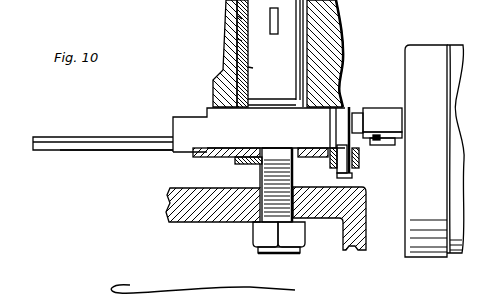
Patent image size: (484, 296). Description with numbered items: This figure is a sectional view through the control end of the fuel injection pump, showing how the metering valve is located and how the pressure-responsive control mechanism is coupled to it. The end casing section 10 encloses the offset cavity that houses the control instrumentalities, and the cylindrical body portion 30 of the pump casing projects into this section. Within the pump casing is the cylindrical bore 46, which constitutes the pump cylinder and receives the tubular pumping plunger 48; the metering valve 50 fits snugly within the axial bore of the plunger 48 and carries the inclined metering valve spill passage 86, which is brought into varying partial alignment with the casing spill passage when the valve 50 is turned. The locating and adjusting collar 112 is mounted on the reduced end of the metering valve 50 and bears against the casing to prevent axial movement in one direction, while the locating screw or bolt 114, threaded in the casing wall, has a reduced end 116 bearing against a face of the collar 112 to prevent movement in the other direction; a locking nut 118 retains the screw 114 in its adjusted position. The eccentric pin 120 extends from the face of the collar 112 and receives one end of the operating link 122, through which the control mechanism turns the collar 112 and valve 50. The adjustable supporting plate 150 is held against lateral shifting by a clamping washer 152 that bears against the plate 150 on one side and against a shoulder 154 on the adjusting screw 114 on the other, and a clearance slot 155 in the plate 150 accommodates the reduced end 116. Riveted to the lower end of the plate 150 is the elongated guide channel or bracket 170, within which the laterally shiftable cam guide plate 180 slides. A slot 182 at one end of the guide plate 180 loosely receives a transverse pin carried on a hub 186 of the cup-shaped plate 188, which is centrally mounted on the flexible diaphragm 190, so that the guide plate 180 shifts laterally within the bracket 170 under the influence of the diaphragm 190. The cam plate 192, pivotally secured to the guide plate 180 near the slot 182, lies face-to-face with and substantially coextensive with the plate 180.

The end casing section 10 is at (170, 222).
The cylindrical body portion 30 is at (226, 80).
The cylindrical bore 46 is at (240, 17).
The tubular pumping plunger 48 is at (241, 40).
The metering valve 50 is at (253, 68).
The metering valve spill passage 86 is at (273, 33).
The locating and adjusting collar 112 is at (271, 110).
The locating screw or bolt 114 is at (268, 254).
The reduced end 116 is at (275, 150).
The locking nut 118 is at (262, 241).
The eccentric pin 120 is at (353, 180).
The operating link 122 is at (358, 162).
The adjustable supporting plate 150 is at (210, 157).
The clamping washer 152 is at (238, 176).
The shoulder 154 is at (290, 173).
The clearance slot 155 is at (262, 150).
The guide channel or bracket 170 is at (184, 125).
The cam guide plate 180 is at (122, 137).
The slot 182 is at (360, 152).
The hub 186 is at (380, 110).
The cup-shaped plate 188 is at (427, 53).
The flexible diaphragm 190 is at (457, 50).
The cam plate 192 is at (121, 151).